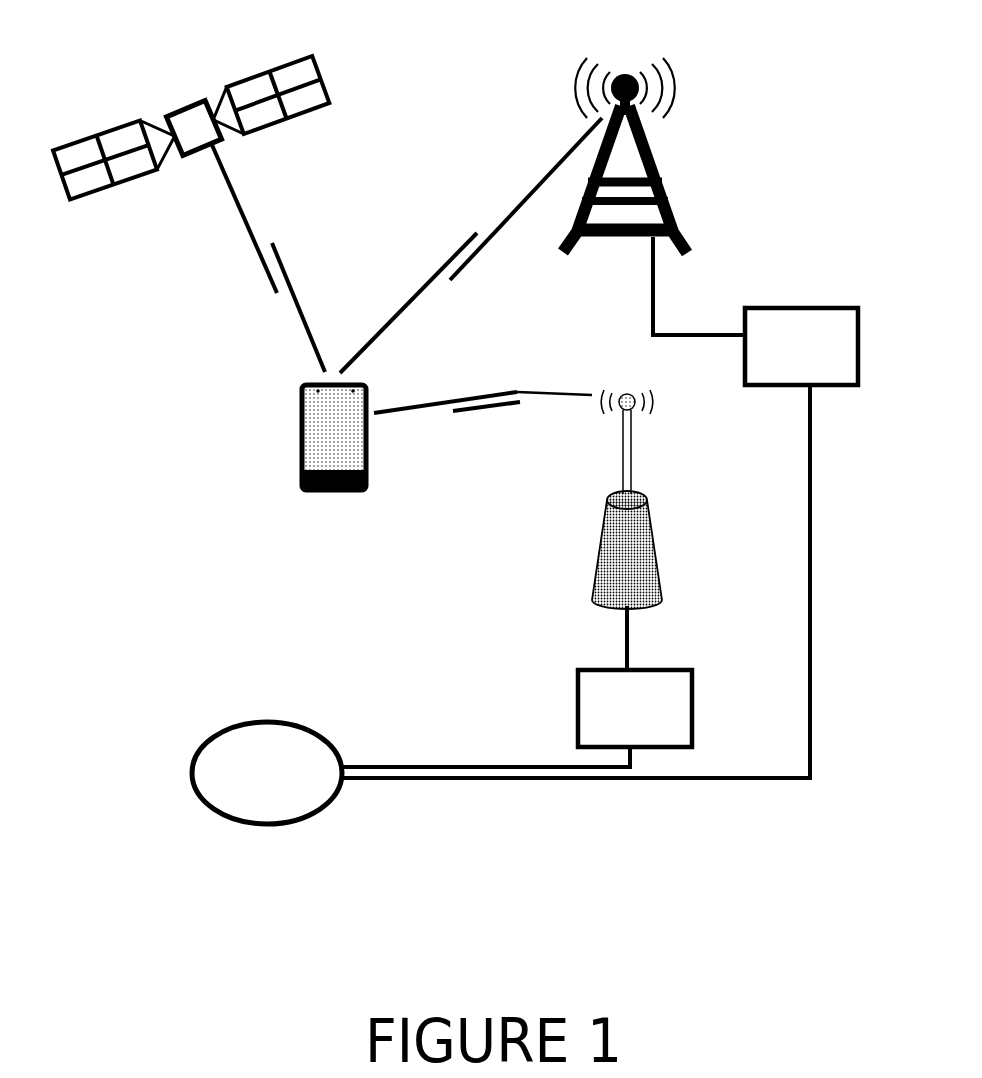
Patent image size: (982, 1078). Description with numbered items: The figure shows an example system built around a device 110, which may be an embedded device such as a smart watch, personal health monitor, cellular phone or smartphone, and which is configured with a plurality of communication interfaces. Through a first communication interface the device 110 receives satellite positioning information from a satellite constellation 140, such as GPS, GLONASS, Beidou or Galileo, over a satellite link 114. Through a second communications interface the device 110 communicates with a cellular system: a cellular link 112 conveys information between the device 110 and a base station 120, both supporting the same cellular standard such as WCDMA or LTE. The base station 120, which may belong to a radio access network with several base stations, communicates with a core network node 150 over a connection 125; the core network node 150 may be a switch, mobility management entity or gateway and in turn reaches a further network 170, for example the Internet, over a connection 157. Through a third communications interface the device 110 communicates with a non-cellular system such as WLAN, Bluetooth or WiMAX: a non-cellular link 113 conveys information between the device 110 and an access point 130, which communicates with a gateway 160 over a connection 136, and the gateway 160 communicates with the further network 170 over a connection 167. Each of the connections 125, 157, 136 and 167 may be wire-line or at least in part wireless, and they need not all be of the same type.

The device 110 is at (340, 492).
The cellular link 112 is at (466, 236).
The non-cellular link 113 is at (467, 415).
The satellite link 114 is at (276, 250).
The base station 120 is at (605, 237).
The connection 125 is at (722, 334).
The access point 130 is at (602, 548).
The connection 136 is at (632, 637).
The satellite constellation 140 is at (190, 106).
The core network node 150 is at (801, 346).
The connection 157 is at (808, 536).
The gateway 160 is at (635, 708).
The connection 167 is at (476, 764).
The further network 170 is at (267, 773).